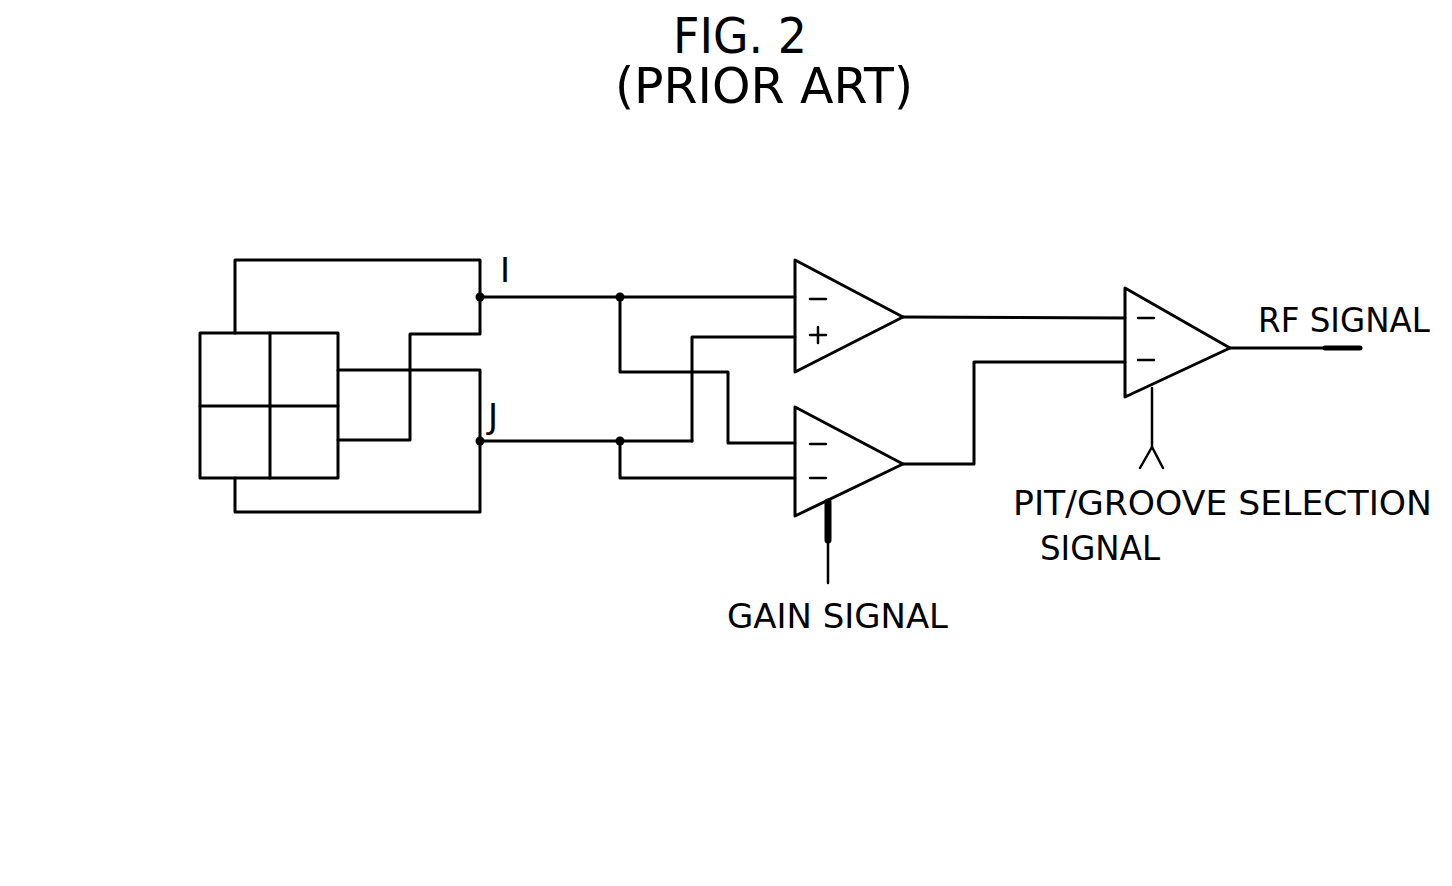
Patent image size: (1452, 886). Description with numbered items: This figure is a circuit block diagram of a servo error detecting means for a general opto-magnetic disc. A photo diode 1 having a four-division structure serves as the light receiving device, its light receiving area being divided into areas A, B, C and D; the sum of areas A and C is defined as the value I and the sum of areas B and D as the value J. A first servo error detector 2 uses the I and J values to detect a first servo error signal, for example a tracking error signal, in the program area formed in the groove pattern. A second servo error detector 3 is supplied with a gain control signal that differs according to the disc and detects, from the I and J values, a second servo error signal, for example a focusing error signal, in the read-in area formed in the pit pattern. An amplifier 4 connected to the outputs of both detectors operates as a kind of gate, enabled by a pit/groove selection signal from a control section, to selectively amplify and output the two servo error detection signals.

The photo diode 1 is at (200, 382).
The first servo error detector 2 is at (842, 285).
The second servo error detector 3 is at (797, 507).
The amplifier 4 is at (1176, 317).